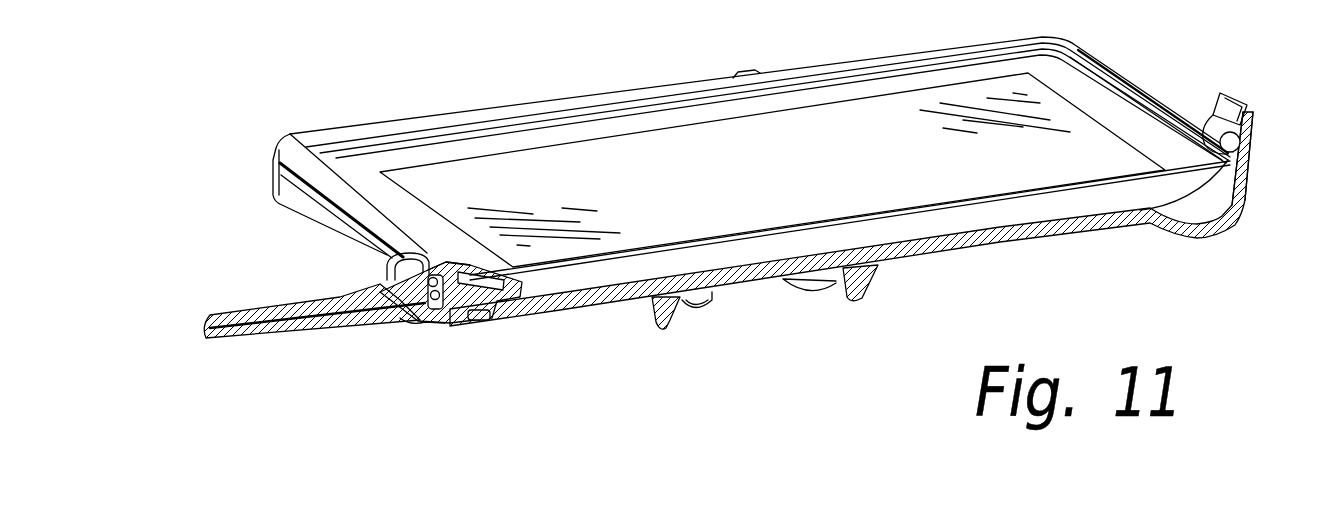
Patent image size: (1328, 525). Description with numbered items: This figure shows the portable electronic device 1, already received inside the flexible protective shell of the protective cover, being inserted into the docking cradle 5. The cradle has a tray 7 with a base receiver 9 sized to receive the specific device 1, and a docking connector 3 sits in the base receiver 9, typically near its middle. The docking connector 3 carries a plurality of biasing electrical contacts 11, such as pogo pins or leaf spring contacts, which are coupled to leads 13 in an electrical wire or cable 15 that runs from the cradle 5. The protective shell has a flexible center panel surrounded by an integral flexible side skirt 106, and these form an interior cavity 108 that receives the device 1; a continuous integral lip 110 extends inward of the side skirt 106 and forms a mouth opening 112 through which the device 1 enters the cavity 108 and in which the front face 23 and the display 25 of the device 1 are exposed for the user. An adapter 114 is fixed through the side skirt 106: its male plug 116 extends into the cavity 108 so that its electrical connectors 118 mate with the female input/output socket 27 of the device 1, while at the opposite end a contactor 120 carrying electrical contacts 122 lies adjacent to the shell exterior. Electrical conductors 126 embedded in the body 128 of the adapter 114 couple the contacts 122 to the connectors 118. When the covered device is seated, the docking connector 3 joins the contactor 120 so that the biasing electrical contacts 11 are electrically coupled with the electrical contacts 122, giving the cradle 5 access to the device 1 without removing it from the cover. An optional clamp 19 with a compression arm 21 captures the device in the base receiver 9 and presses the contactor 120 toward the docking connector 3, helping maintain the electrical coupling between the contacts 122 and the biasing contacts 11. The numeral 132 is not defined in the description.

The portable electronic device 1 is at (980, 213).
The docking connector 3 is at (400, 270).
The docking cradle 5 is at (1050, 240).
The tray 7 is at (720, 78).
The base receiver 9 is at (293, 145).
The biasing electrical contacts 11 is at (393, 322).
The leads 13 is at (230, 318).
The electrical wire or cable 15 is at (273, 332).
The clamp 19 is at (1237, 100).
The arm 21 is at (1253, 162).
The front face 23 is at (923, 78).
The display 25 is at (837, 190).
The female input/output socket 27 is at (505, 283).
The side skirt 106 is at (1197, 203).
The interior cavity 108 is at (880, 250).
The continuous integral lip 110 is at (1173, 110).
The mouth opening 112 is at (1177, 127).
The adapter 114 is at (427, 253).
The male plug 116 is at (548, 313).
The electrical connectors 118 is at (463, 290).
The contactor 120 is at (423, 315).
The electrical contacts 122 is at (473, 327).
The electrical conductors 126 is at (443, 273).
The body 128 is at (437, 325).
The pivot 132 is at (447, 328).